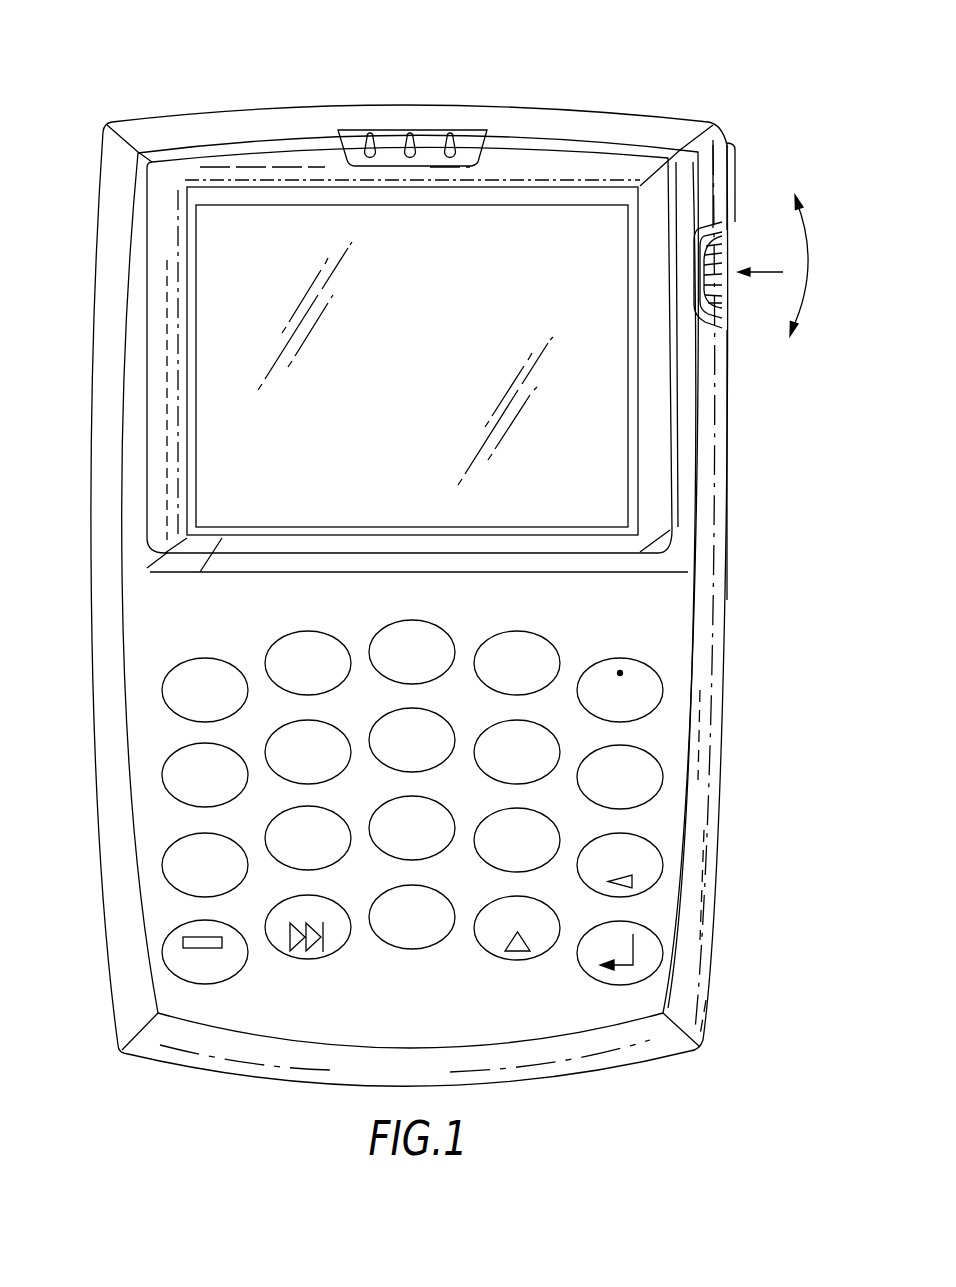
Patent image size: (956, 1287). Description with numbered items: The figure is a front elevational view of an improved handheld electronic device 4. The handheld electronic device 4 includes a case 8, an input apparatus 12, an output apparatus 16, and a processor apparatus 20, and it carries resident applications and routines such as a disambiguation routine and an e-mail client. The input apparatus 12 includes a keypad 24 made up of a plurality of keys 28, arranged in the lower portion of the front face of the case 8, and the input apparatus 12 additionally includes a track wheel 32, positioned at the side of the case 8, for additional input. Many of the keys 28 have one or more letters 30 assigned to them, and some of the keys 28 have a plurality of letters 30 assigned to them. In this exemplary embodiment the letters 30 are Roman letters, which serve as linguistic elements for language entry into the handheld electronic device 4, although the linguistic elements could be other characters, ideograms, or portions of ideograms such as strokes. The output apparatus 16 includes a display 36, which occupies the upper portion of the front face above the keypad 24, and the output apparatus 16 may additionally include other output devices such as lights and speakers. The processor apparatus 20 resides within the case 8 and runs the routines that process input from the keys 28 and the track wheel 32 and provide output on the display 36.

The handheld electronic device 4 is at (427, 547).
The case 8 is at (622, 114).
The input apparatus 12 is at (751, 397).
The output apparatus 16 is at (309, 212).
The processor apparatus 20 is at (158, 605).
The keypad 24 is at (366, 791).
The keys 28 is at (328, 634).
The letters 30 is at (290, 674).
The track wheel 32 is at (737, 268).
The display 36 is at (203, 458).